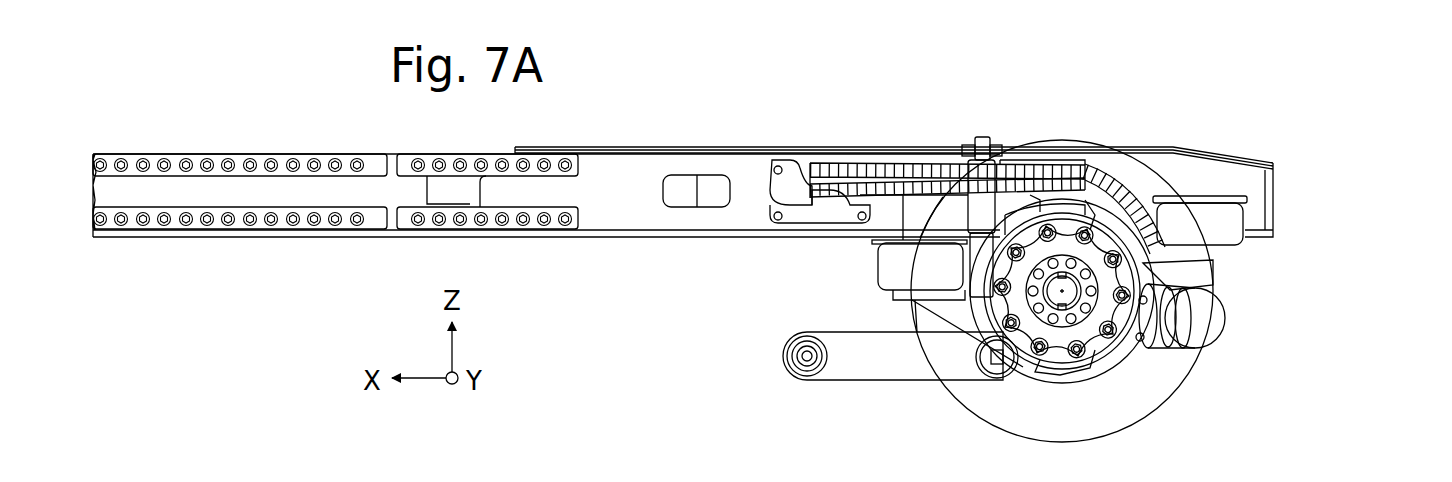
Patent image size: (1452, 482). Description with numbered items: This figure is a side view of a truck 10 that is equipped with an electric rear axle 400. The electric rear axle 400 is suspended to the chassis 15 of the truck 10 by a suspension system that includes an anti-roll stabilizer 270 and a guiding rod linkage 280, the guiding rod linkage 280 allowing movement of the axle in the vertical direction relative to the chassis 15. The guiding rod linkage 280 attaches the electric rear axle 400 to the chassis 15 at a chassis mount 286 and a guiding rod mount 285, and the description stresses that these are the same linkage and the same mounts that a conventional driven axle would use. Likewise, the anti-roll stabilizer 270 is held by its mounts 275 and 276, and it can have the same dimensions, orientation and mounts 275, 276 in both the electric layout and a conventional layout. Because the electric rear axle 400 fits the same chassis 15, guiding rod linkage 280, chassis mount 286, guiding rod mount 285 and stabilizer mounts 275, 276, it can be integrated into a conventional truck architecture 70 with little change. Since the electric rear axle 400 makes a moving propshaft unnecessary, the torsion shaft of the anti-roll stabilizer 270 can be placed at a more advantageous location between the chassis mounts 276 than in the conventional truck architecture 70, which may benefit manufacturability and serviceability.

The truck 10 is at (170, 133).
The chassis 15 is at (240, 236).
The conventional truck architecture 70 is at (148, 473).
The anti-roll stabilizer 270 is at (870, 385).
The mount 275 is at (997, 364).
The chassis mount 276 is at (800, 356).
The guiding rod linkage 280 is at (930, 158).
The guiding rod mount 285 is at (1085, 170).
The chassis mount 286 is at (890, 150).
The electric rear axle 400 is at (1212, 395).